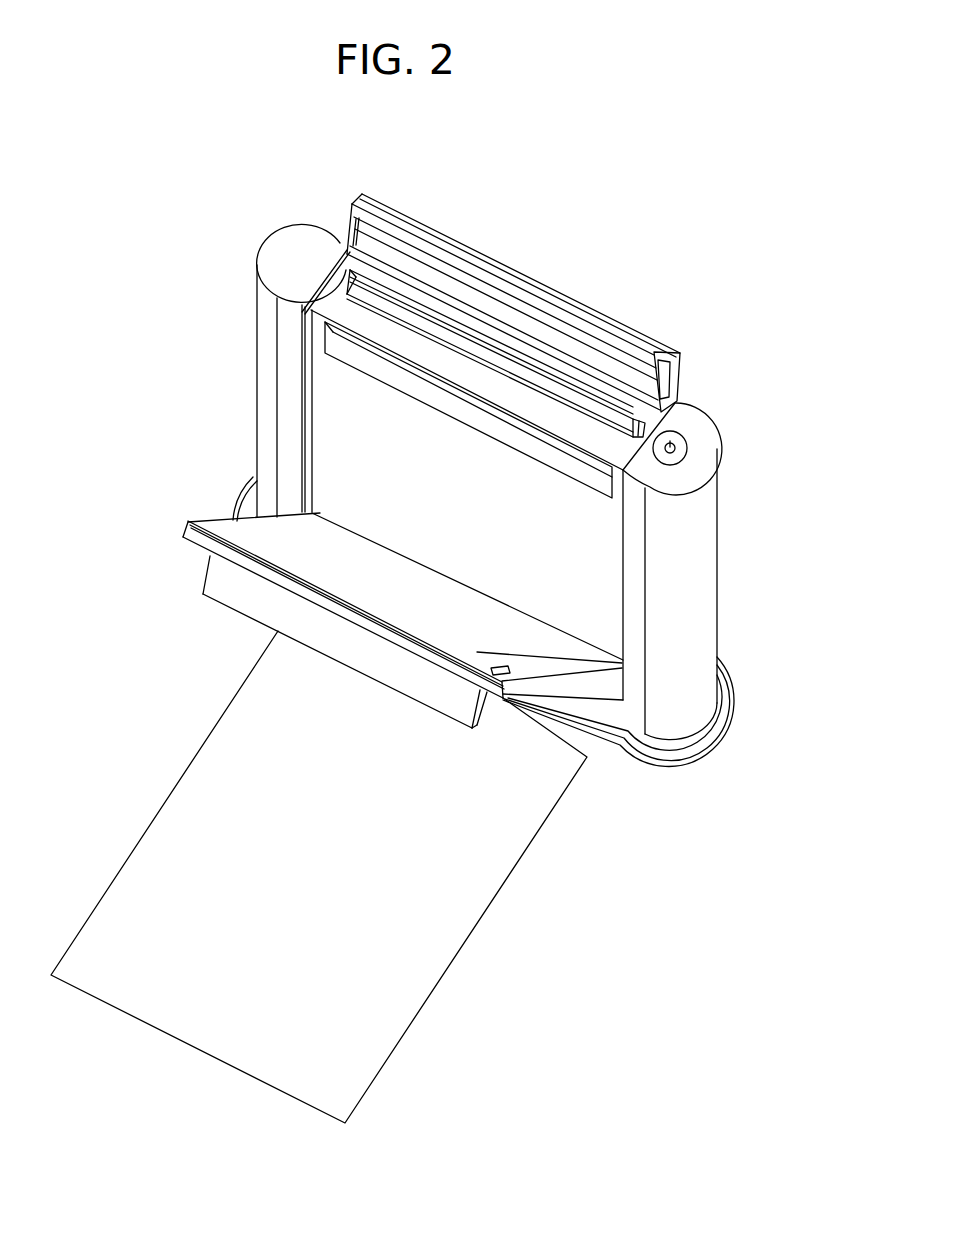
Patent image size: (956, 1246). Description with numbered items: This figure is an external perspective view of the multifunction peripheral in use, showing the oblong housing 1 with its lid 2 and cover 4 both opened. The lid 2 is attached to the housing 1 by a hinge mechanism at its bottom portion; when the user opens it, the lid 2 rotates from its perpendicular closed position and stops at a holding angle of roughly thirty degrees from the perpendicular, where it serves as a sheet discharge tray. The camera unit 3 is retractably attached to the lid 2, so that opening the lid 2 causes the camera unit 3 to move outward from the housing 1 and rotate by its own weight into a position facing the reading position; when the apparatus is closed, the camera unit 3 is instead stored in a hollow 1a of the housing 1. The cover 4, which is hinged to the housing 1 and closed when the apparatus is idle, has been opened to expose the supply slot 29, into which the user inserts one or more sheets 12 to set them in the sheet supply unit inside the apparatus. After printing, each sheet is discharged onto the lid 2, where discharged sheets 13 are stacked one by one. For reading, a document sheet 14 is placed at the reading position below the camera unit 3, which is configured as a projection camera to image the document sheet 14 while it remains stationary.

The housing 1 is at (288, 250).
The hollow 1a is at (593, 475).
The lid 2 is at (192, 532).
The camera unit 3 is at (233, 597).
The cover 4 is at (538, 298).
The sheet 12 is at (592, 410).
The discharged sheets 13 is at (518, 647).
The document sheet 14 is at (448, 921).
The supply slot 29 is at (338, 287).